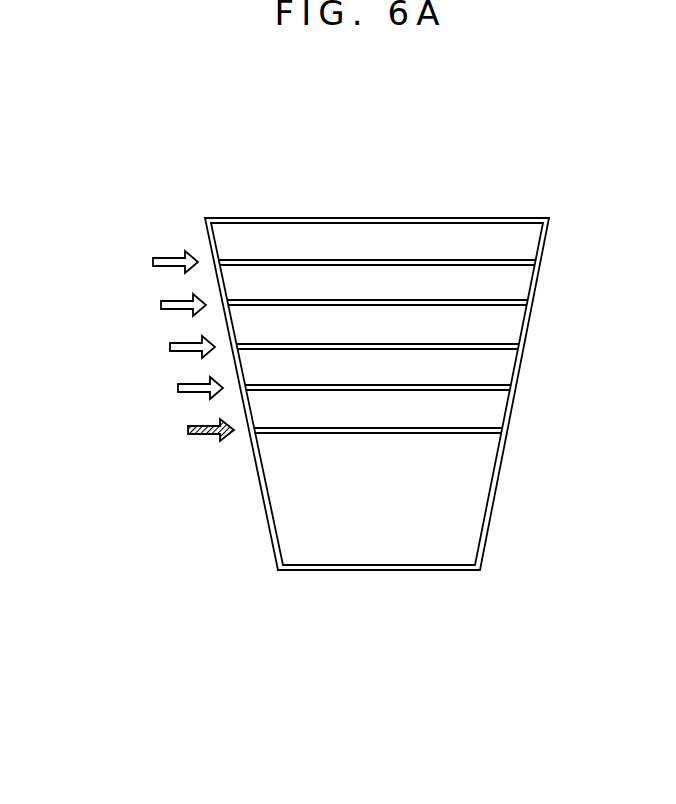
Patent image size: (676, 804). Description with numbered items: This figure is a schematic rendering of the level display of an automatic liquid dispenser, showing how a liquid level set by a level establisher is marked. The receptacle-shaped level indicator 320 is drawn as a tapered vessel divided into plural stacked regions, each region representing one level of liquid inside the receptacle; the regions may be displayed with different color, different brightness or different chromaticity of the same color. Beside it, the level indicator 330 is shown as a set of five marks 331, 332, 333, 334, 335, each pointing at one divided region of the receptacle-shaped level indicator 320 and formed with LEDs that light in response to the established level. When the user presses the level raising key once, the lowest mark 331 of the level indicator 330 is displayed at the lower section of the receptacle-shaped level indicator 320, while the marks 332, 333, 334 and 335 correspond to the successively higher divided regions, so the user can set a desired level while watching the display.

The receptacle-shaped level indicator 320 is at (278, 208).
The level indicator 330 is at (96, 243).
The first level mark of the level indicator 331 is at (188, 426).
The second level mark of the level indicator 332 is at (178, 384).
The third level mark of the level indicator 333 is at (170, 343).
The fourth level mark of the level indicator 334 is at (161, 301).
The fifth level mark of the level indicator 335 is at (153, 258).